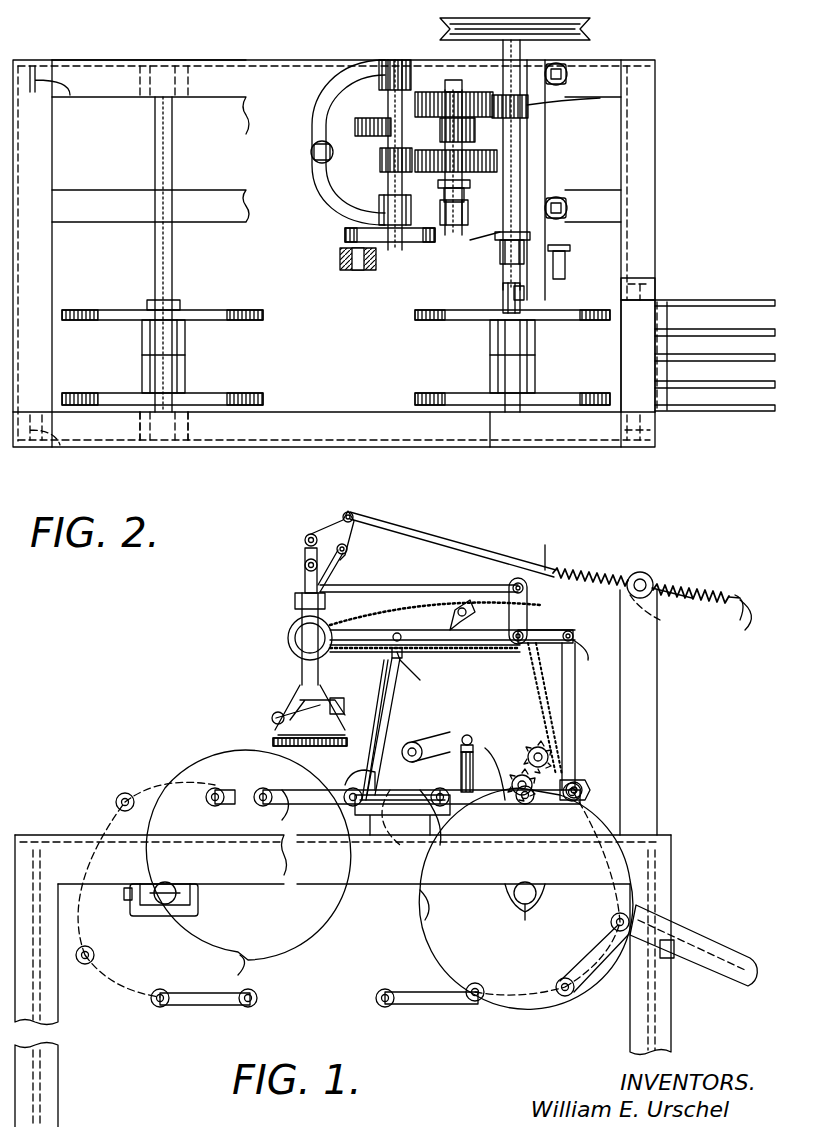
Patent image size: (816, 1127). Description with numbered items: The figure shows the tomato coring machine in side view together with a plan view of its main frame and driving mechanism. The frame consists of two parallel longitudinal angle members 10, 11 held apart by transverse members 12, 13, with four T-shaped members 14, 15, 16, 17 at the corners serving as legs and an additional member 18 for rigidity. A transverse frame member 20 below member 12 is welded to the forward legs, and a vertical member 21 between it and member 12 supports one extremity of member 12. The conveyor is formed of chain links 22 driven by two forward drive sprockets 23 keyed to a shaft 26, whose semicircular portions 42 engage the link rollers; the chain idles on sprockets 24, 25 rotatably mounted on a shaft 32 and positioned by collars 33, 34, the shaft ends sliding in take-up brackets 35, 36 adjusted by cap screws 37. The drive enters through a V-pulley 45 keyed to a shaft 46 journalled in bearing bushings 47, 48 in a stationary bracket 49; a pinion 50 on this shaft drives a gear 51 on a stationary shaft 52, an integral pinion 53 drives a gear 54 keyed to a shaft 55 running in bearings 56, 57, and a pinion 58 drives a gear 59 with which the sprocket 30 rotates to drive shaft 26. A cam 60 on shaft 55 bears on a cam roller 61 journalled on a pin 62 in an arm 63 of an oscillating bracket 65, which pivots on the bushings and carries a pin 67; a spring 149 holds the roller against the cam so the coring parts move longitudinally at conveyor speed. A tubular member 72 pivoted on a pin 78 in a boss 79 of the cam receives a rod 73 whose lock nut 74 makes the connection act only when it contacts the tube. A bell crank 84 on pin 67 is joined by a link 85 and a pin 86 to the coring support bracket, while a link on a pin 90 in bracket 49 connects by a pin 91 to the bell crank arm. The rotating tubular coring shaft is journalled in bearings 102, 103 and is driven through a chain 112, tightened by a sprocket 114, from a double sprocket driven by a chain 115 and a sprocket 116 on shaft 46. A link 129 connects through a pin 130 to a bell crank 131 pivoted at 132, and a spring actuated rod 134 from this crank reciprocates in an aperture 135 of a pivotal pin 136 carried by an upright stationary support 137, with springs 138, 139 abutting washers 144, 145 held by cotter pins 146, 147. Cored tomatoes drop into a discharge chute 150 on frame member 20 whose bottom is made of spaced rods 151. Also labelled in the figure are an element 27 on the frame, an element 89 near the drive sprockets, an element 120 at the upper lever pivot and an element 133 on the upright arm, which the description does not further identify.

In FIG. 2, the angle member 10 is at (388, 447).
In FIG. 1, the angle member 10 is at (333, 884).
In FIG. 2, the angle member 11 is at (322, 62).
In FIG. 2, the transverse member 12 is at (656, 240).
In FIG. 2, the transverse member 13 is at (52, 260).
In FIG. 2, the T-shaped member 14 is at (650, 430).
In FIG. 2, the T-shaped member 15 is at (640, 78).
In FIG. 2, the T-shaped member 16 is at (58, 97).
In FIG. 2, the T-shaped member 17 is at (55, 447).
In FIG. 1, the T-shaped member 17 is at (58, 1105).
In FIG. 2, the frame member 18 is at (262, 178).
In FIG. 1, the transverse frame member 20 is at (229, 780).
In FIG. 2, the vertical member 21 is at (655, 282).
In FIG. 1, the vertical member 21 is at (190, 790).
In FIG. 1, the chain link 22 is at (432, 1004).
In FIG. 2, the drive chain sprocket 23 is at (578, 320).
In FIG. 1, the drive chain sprocket 23 is at (445, 950).
In FIG. 2, the idler chain sprocket 24 is at (263, 395).
In FIG. 1, the idler chain sprocket 24 is at (255, 935).
In FIG. 2, the idler chain sprocket 25 is at (263, 320).
In FIG. 2, the shaft 26 is at (503, 297).
In FIG. 1, the shaft 26 is at (525, 916).
In FIG. 2, the bearing support 27 is at (490, 447).
In FIG. 2, the sprocket 30 is at (470, 235).
In FIG. 2, the shaft 32 is at (172, 270).
In FIG. 1, the shaft 32 is at (165, 904).
In FIG. 2, the collar 33 is at (180, 305).
In FIG. 2, the collar 34 is at (185, 395).
In FIG. 2, the take-up bracket 35 is at (150, 447).
In FIG. 1, the take-up bracket 35 is at (198, 905).
In FIG. 2, the take-up bracket 36 is at (185, 66).
In FIG. 1, the cap screw 37 is at (128, 900).
In FIG. 2, the semicircular portion 42 is at (510, 392).
In FIG. 1, the semicircular portion 42 is at (425, 920).
In FIG. 2, the V-pulley 45 is at (590, 24).
In FIG. 2, the shaft 46 is at (520, 178).
In FIG. 1, the shaft 46 is at (473, 755).
In FIG. 2, the bearing bushing 47 is at (566, 70).
In FIG. 2, the bearing bushing 48 is at (530, 236).
In FIG. 2, the bracket 49 is at (558, 122).
In FIG. 2, the pinion 50 is at (600, 98).
In FIG. 2, the gear 51 is at (500, 95).
In FIG. 2, the stationary shaft 52 is at (430, 92).
In FIG. 2, the pinion 53 is at (475, 135).
In FIG. 2, the gear 54 is at (355, 127).
In FIG. 2, the shaft 55 is at (395, 60).
In FIG. 2, the bearing 56 is at (400, 60).
In FIG. 2, the bearing 57 is at (418, 245).
In FIG. 2, the pinion 58 is at (380, 160).
In FIG. 2, the gear 59 is at (498, 160).
In FIG. 2, the cam 60 is at (380, 222).
In FIG. 1, the cam 60 is at (310, 815).
In FIG. 1, the cam roller 61 is at (375, 730).
In FIG. 1, the pin 62 is at (418, 745).
In FIG. 1, the arm 63 is at (505, 800).
In FIG. 1, the oscillating bracket 65 is at (520, 690).
In FIG. 1, the pin 67 is at (545, 630).
In FIG. 1, the tubular member 72 is at (390, 730).
In FIG. 1, the rod 73 is at (403, 652).
In FIG. 1, the lock nut 74 is at (424, 676).
In FIG. 2, the pin 78 is at (358, 270).
In FIG. 1, the pin 78 is at (364, 775).
In FIG. 2, the boss 79 is at (345, 270).
In FIG. 1, the bell crank 84 is at (530, 608).
In FIG. 1, the link 85 is at (440, 585).
In FIG. 1, the pin 86 is at (523, 590).
In FIG. 1, the sprocket 89 is at (548, 760).
In FIG. 2, the pin 90 is at (565, 268).
In FIG. 1, the pin 90 is at (600, 788).
In FIG. 1, the pin 91 is at (592, 659).
In FIG. 1, the bearing 102 is at (302, 663).
In FIG. 1, the bearing 103 is at (295, 598).
In FIG. 1, the chain 112 is at (388, 614).
In FIG. 1, the sprocket 114 is at (462, 605).
In FIG. 1, the chain 115 is at (548, 726).
In FIG. 2, the sprocket 116 is at (522, 292).
In FIG. 1, the sprocket 116 is at (590, 768).
In FIG. 1, the lever pivot 120 is at (353, 517).
In FIG. 1, the link 129 is at (305, 560).
In FIG. 1, the pin 130 is at (305, 540).
In FIG. 1, the bell crank 131 is at (350, 525).
In FIG. 1, the pivot 132 is at (347, 552).
In FIG. 1, the connecting link 133 is at (312, 575).
In FIG. 1, the spring actuated rod 134 is at (476, 550).
In FIG. 1, the aperture 135 is at (668, 613).
In FIG. 1, the pivotal pin 136 is at (680, 575).
In FIG. 1, the upright stationary support 137 is at (645, 700).
In FIG. 1, the spring 138 is at (648, 575).
In FIG. 1, the spring 139 is at (700, 590).
In FIG. 1, the washer 144 is at (580, 570).
In FIG. 1, the washer 145 is at (740, 597).
In FIG. 1, the cotter pin 146 is at (548, 540).
In FIG. 1, the cotter pin 147 is at (752, 619).
In FIG. 1, the spring 149 is at (395, 845).
In FIG. 1, the discharge chute 150 is at (725, 910).
In FIG. 2, the rod 151 is at (722, 385).